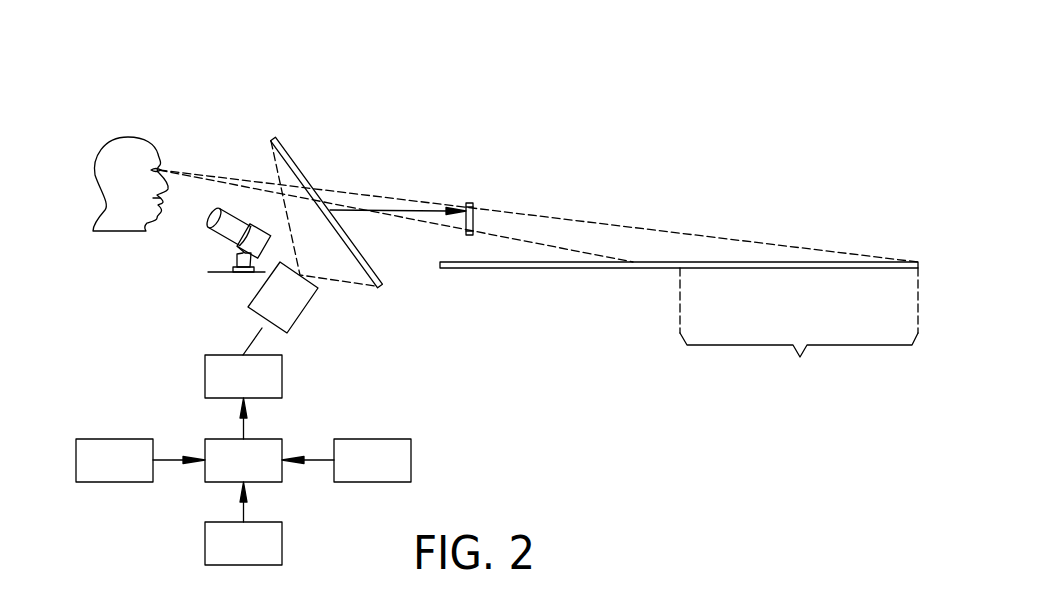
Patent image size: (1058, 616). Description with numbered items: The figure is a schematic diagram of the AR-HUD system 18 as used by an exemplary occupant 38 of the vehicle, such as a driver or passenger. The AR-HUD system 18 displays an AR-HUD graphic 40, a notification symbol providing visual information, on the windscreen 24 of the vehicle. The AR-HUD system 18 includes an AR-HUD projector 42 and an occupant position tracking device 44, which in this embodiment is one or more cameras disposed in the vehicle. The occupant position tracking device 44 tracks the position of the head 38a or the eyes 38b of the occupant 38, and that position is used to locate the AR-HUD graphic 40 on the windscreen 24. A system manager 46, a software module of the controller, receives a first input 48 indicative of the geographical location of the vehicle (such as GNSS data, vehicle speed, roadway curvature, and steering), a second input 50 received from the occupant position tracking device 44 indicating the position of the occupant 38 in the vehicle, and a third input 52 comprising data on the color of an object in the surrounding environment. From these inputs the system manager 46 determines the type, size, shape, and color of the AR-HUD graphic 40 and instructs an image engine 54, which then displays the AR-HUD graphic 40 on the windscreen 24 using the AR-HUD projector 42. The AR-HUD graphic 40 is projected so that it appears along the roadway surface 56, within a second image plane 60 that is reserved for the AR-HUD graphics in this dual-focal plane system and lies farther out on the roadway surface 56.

The AR-HUD system 18 is at (232, 62).
The occupant 38 is at (82, 130).
The head 38a is at (132, 137).
The eyes 38b is at (160, 167).
The windscreen 24 is at (285, 148).
The AR-HUD graphic 40 is at (470, 203).
The AR-HUD projector 42 is at (297, 308).
The occupant position tracking device 44 is at (235, 250).
The system manager 46 is at (258, 474).
The first input 48 is at (258, 556).
The second input 50 is at (386, 474).
The third input 52 is at (129, 474).
The image engine 54 is at (258, 389).
The roadway surface 56 is at (550, 268).
The second image plane 60 is at (799, 326).